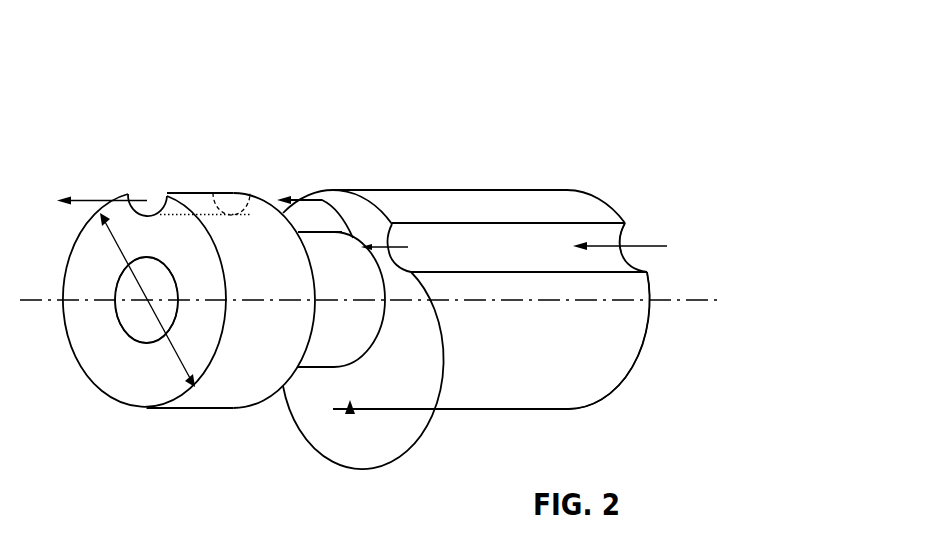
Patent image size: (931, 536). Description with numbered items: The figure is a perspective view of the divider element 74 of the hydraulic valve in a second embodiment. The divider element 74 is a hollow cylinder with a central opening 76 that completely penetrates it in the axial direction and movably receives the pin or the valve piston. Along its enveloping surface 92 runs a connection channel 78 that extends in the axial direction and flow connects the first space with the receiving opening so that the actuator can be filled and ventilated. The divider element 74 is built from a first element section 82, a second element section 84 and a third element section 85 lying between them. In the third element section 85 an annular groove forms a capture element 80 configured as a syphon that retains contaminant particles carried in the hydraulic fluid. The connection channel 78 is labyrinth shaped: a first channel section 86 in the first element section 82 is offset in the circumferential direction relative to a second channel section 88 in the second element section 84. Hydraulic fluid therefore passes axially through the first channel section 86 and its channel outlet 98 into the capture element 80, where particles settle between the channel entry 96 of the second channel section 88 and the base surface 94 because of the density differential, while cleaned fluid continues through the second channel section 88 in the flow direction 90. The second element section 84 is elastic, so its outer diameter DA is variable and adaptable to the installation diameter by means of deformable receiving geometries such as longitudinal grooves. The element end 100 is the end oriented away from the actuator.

The divider element 74 is at (732, 133).
The central opening 76 is at (140, 321).
The connection channel 78 is at (665, 257).
The capture element 80 is at (350, 414).
The first element section 82 is at (515, 338).
The second element section 84 is at (271, 338).
The third element section 85 is at (358, 335).
The first channel section 86 is at (497, 247).
The second channel section 88 is at (153, 196).
The flow direction 90 is at (637, 250).
The enveloping surface 92 is at (452, 412).
The base surface 94 is at (321, 370).
The channel entry 96 is at (249, 192).
The channel outlet 98 is at (388, 237).
The element end 100 is at (648, 330).
The outer diameter DA is at (178, 357).